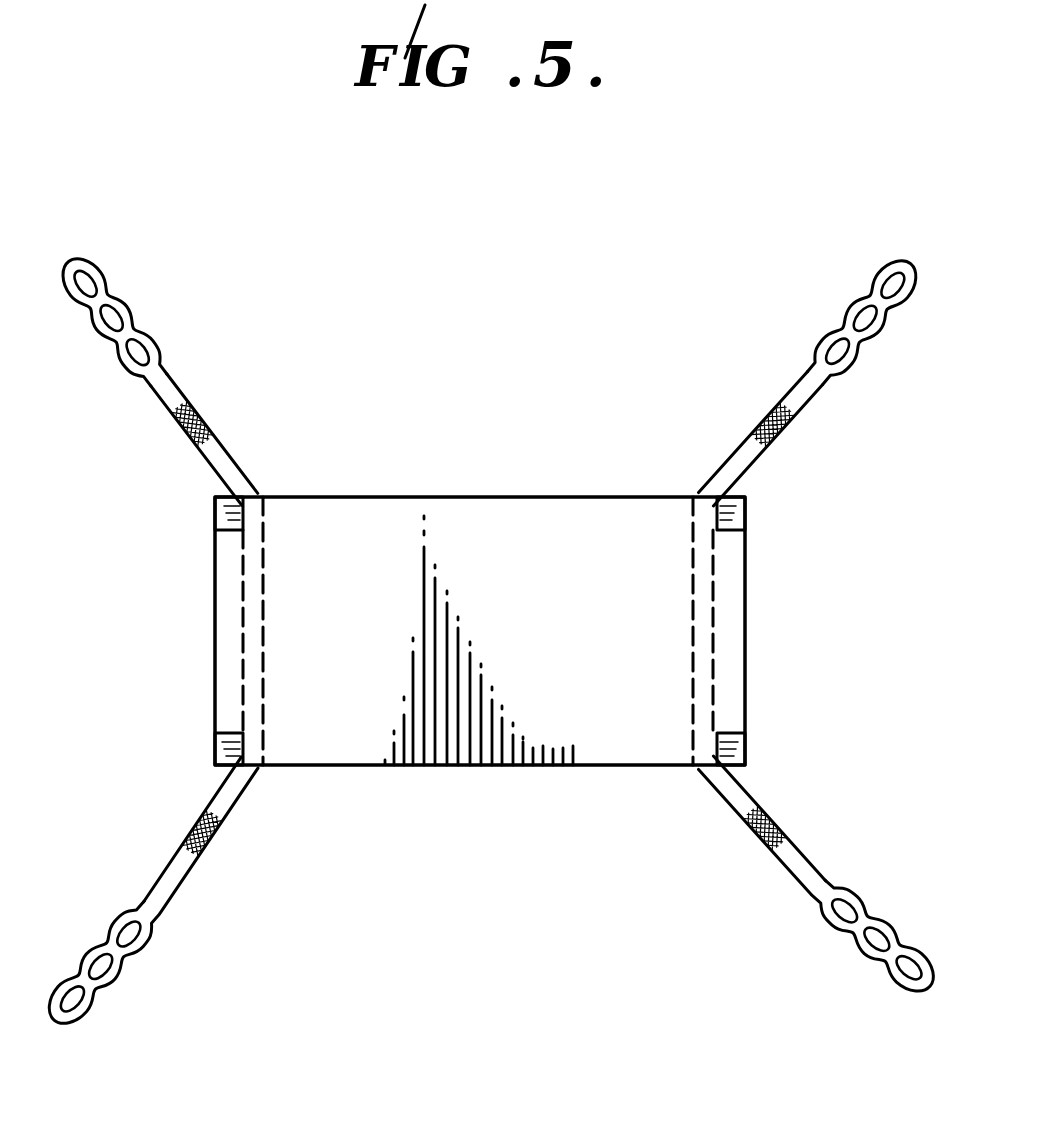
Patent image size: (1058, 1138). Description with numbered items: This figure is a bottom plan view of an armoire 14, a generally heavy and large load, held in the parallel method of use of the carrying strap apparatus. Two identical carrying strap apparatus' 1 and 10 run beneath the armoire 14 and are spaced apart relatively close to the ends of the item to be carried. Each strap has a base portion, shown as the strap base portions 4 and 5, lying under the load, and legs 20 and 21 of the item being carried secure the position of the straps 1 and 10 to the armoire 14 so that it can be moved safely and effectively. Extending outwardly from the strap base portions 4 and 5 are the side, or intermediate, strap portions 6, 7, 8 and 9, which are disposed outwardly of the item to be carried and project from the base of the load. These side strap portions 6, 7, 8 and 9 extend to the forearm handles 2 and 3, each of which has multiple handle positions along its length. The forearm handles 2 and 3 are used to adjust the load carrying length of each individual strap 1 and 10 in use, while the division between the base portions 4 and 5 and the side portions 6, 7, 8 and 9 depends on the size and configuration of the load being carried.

The armoire 14 is at (467, 488).
The leg 20 is at (215, 508).
The leg 21 is at (735, 512).
The carrying strap apparatus 1 is at (238, 578).
The strap base portion 4 is at (248, 685).
The carrying strap apparatus 10 is at (716, 620).
The strap base portion 5 is at (710, 686).
The side strap portion 6 is at (205, 432).
The side strap portion 8 is at (770, 410).
The side strap portion 7 is at (190, 862).
The side strap portion 9 is at (812, 857).
The forearm handle 2 is at (875, 338).
The forearm handle 3 is at (858, 950).